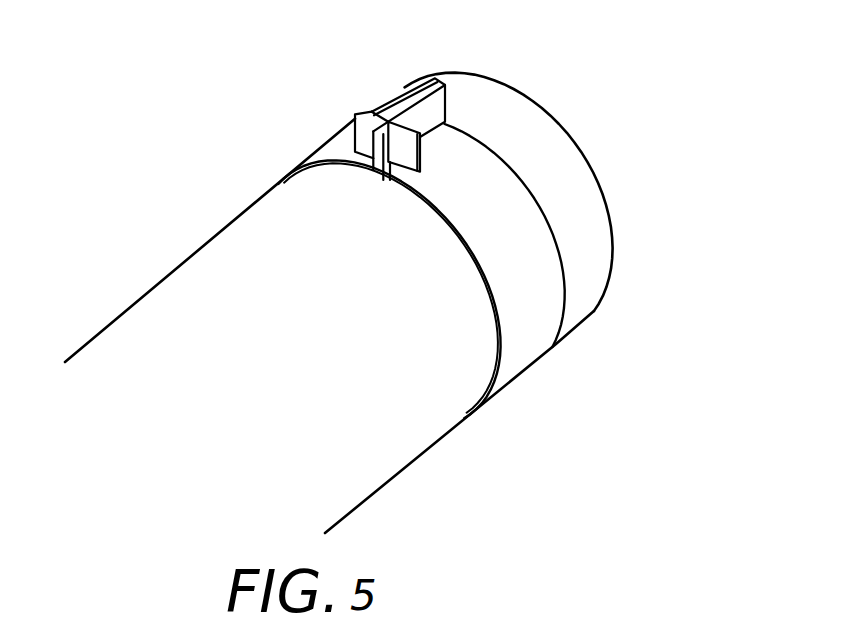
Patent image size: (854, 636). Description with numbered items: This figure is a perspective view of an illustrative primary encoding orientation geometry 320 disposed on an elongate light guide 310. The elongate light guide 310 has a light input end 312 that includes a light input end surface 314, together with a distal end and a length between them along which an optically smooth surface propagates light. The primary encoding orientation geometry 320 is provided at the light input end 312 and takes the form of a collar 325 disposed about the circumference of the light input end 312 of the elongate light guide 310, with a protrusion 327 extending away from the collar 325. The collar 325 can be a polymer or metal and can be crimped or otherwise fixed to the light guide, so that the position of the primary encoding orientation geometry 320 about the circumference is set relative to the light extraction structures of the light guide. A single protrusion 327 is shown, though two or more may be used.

The elongate light guide 310 is at (173, 268).
The light input end 312 is at (393, 478).
The light input end surface 314 is at (610, 213).
The collar 325 is at (482, 168).
The primary encoding orientation geometry 320 is at (383, 75).
The protrusion 327 is at (402, 99).